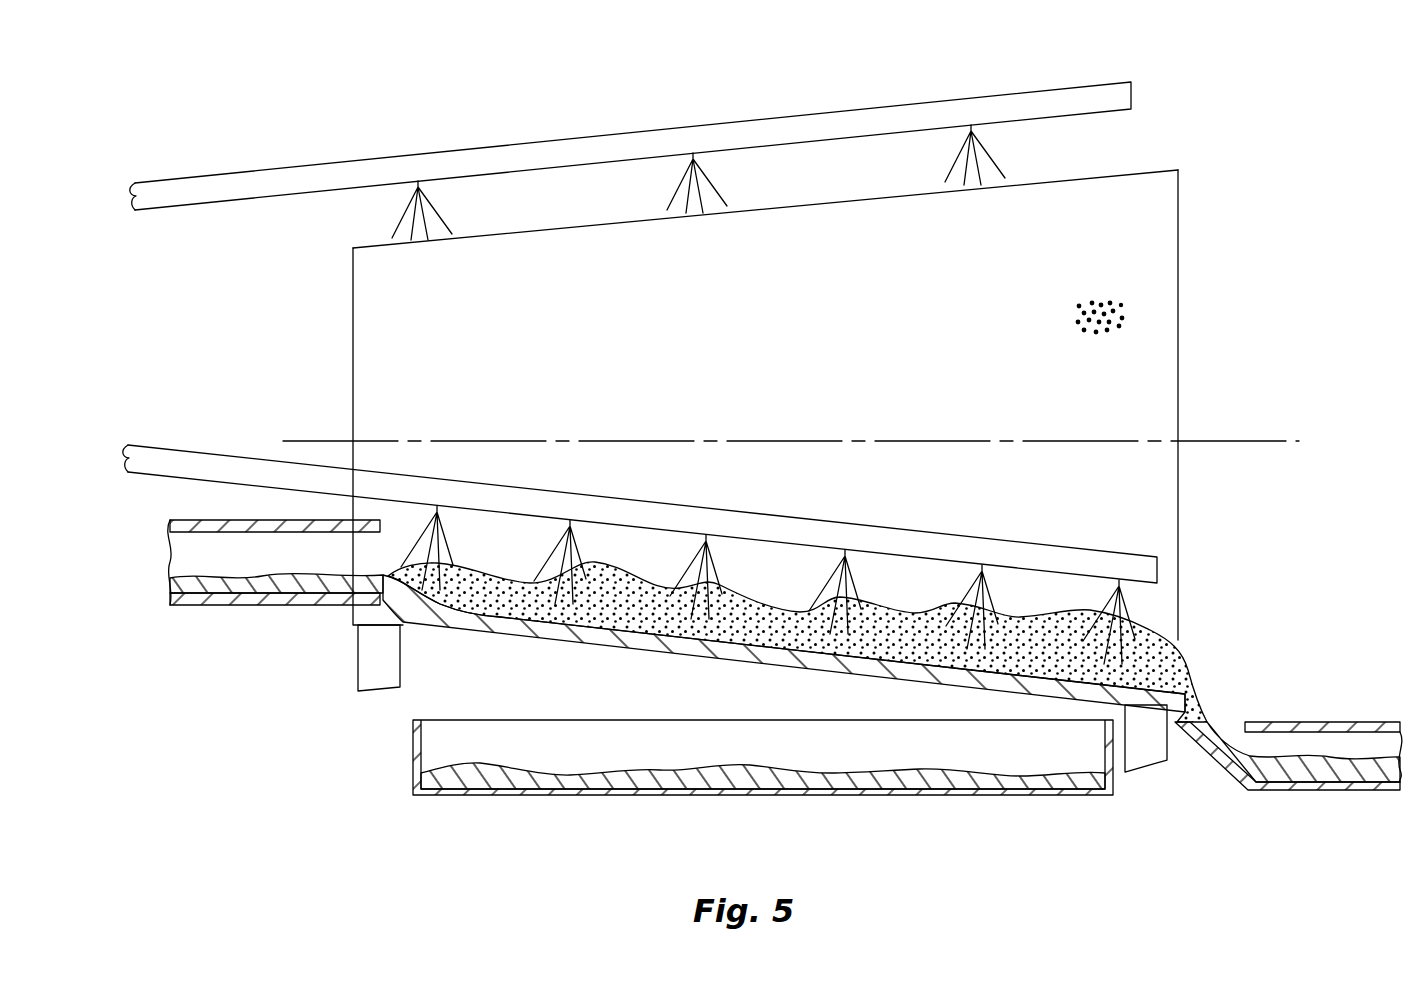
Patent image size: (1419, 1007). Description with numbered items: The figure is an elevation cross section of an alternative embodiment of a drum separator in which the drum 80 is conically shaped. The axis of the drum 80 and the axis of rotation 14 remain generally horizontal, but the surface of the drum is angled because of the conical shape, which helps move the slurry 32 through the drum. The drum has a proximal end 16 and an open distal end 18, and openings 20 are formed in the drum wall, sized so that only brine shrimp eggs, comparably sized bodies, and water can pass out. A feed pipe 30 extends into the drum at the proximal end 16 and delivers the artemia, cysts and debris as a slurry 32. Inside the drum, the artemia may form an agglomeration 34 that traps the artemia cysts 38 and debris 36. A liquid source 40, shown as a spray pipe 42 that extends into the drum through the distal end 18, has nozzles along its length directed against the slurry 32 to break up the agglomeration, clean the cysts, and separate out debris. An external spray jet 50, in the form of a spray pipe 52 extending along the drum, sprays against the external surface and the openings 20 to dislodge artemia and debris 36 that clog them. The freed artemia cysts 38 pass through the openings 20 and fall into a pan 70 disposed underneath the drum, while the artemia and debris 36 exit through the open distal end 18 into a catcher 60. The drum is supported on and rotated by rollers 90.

The axis of rotation 14 is at (1210, 442).
The proximal end 16 is at (353, 265).
The distal end 18 is at (1180, 197).
The openings 20 is at (1120, 312).
The feed pipe 30 is at (280, 607).
The slurry 32 is at (205, 583).
The agglomeration 34 is at (733, 627).
The debris 36 is at (1193, 660).
The artemia cysts 38 is at (520, 782).
The liquid source 40 is at (1132, 603).
The spray pipe 42 is at (208, 463).
The external spray jet 50 is at (983, 142).
The spray pipe 52 is at (628, 134).
The catcher 60 is at (1278, 723).
The pan 70 is at (998, 797).
The drum 80 is at (1168, 182).
The rollers 90 is at (358, 673).